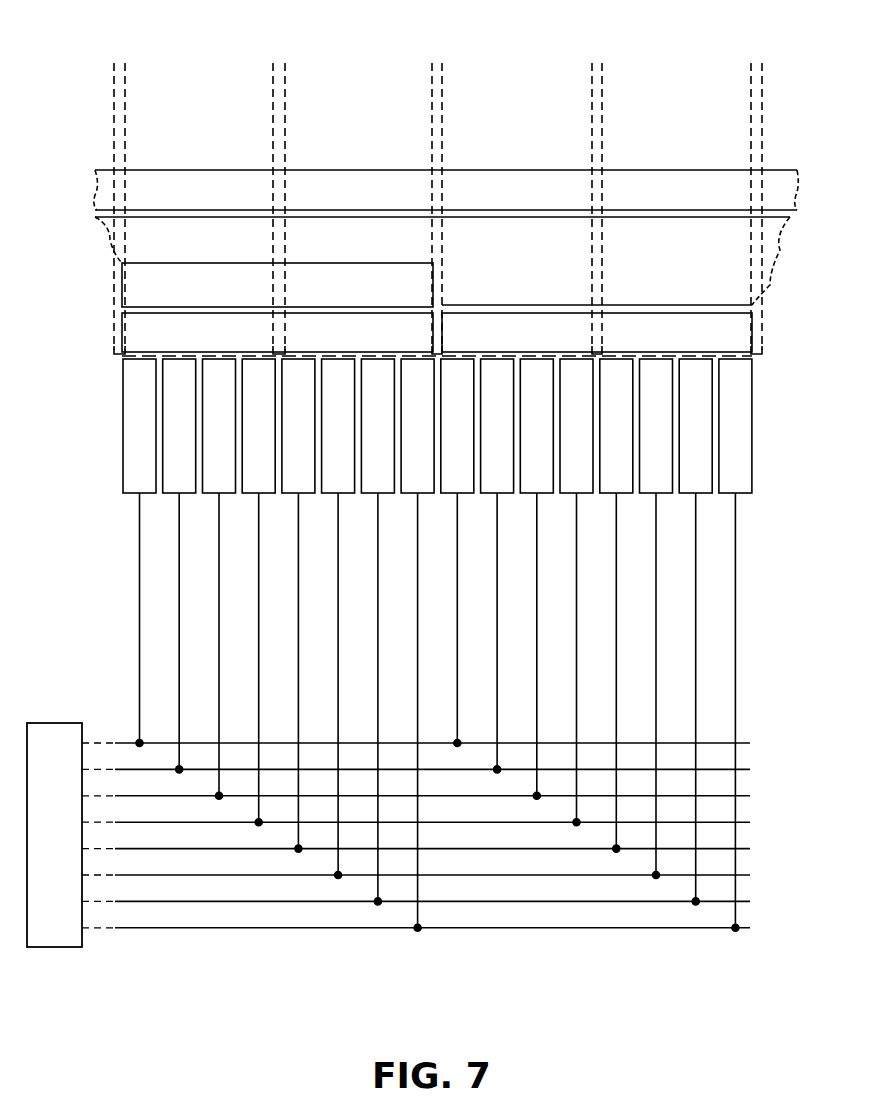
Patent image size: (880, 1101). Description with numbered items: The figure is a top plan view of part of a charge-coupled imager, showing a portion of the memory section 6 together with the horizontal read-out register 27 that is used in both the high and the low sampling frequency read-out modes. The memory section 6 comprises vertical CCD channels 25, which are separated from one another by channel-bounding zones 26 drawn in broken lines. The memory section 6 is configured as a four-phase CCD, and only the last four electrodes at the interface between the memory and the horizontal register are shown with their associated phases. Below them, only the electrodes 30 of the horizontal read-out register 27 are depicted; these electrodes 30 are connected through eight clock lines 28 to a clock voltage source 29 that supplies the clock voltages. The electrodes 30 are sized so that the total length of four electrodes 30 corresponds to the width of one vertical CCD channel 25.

The memory section 6 is at (80, 295).
The vertical CCD channel 25 is at (190, 78).
The channel-bounding zone 26 is at (114, 126).
The horizontal read-out register 27 is at (768, 437).
The clock line 28 is at (768, 838).
The clock voltage source 29 is at (62, 947).
The electrode 30 is at (123, 420).